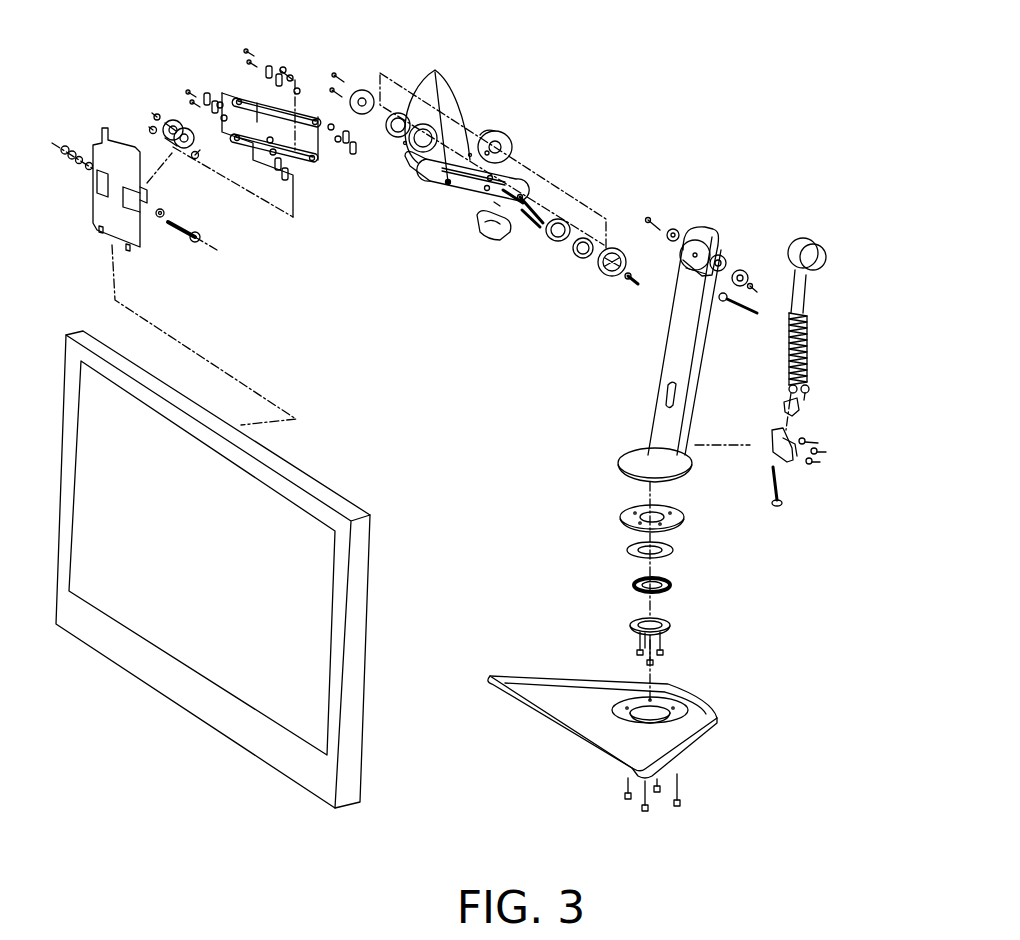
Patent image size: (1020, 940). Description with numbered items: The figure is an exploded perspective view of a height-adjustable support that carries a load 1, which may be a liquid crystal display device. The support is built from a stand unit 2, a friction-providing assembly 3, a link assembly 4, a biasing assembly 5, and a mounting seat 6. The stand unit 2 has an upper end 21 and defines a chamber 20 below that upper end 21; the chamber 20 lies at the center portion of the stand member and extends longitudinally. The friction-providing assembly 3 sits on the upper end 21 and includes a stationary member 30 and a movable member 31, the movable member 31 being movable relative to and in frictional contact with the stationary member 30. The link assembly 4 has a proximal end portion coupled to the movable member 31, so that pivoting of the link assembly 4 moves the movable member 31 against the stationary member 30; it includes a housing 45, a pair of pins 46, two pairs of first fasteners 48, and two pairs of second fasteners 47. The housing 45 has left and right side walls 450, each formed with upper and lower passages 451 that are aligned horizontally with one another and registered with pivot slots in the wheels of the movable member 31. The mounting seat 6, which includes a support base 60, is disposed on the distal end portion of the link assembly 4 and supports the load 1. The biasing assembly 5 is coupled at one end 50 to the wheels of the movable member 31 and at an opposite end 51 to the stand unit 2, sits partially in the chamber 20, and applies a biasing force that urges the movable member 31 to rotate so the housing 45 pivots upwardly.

The load 1 is at (333, 493).
The stand unit 2 is at (744, 628).
The friction-providing assembly 3 is at (489, 190).
The link assembly 4 is at (303, 73).
The biasing assembly 5 is at (828, 348).
The mounting seat 6 is at (94, 134).
The chamber 20 is at (700, 375).
The upper end 21 is at (723, 230).
The stationary member 30 is at (607, 276).
The movable member 31 is at (505, 133).
The housing 45 is at (463, 192).
The pins 46 is at (525, 222).
The second fasteners 47 is at (639, 286).
The first fasteners 48 is at (435, 72).
The one end 50 is at (810, 250).
The opposite end 51 is at (828, 448).
The support base 60 is at (175, 127).
The side walls 450 is at (458, 185).
The passages 451 is at (490, 175).